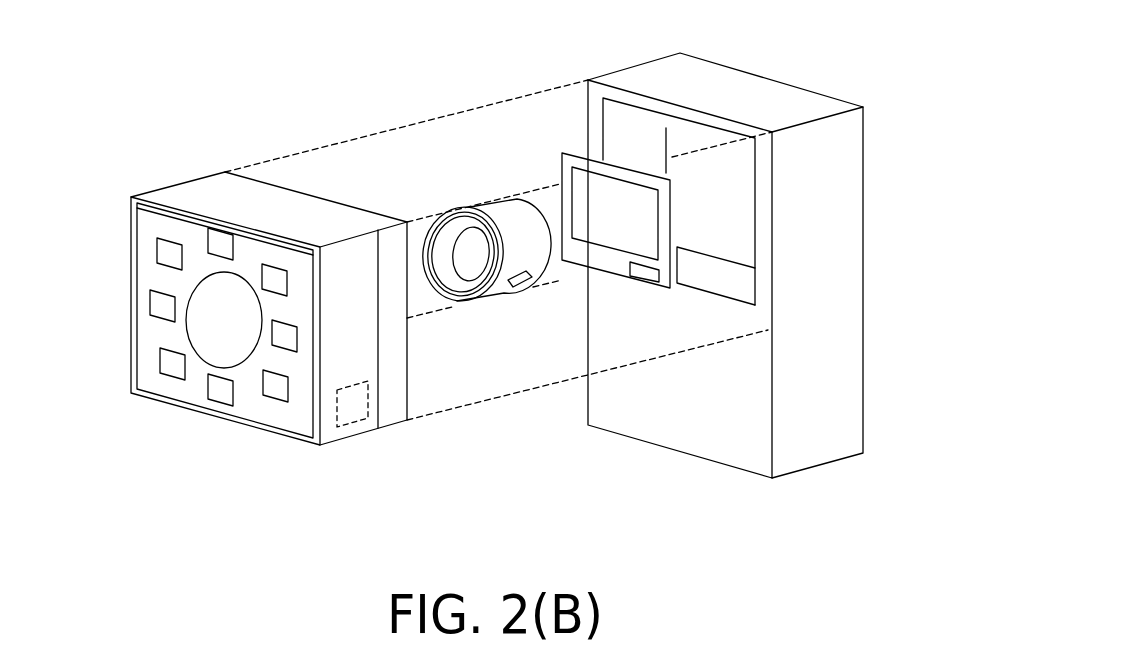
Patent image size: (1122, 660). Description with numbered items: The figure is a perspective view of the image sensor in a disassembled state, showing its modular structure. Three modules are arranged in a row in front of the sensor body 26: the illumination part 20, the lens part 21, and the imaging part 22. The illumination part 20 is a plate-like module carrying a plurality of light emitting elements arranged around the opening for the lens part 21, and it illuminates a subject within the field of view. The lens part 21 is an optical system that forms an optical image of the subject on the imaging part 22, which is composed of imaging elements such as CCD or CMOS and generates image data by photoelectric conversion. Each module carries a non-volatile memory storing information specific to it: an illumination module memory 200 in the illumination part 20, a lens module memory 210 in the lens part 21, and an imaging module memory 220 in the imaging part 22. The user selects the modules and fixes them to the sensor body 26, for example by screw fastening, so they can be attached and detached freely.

The illumination part 20 is at (208, 192).
The illumination module memory 200 is at (353, 413).
The lens part 21 is at (478, 193).
The lens module memory 210 is at (520, 287).
The imaging part 22 is at (582, 152).
The imaging module memory 220 is at (646, 276).
The sensor body 26 is at (767, 88).